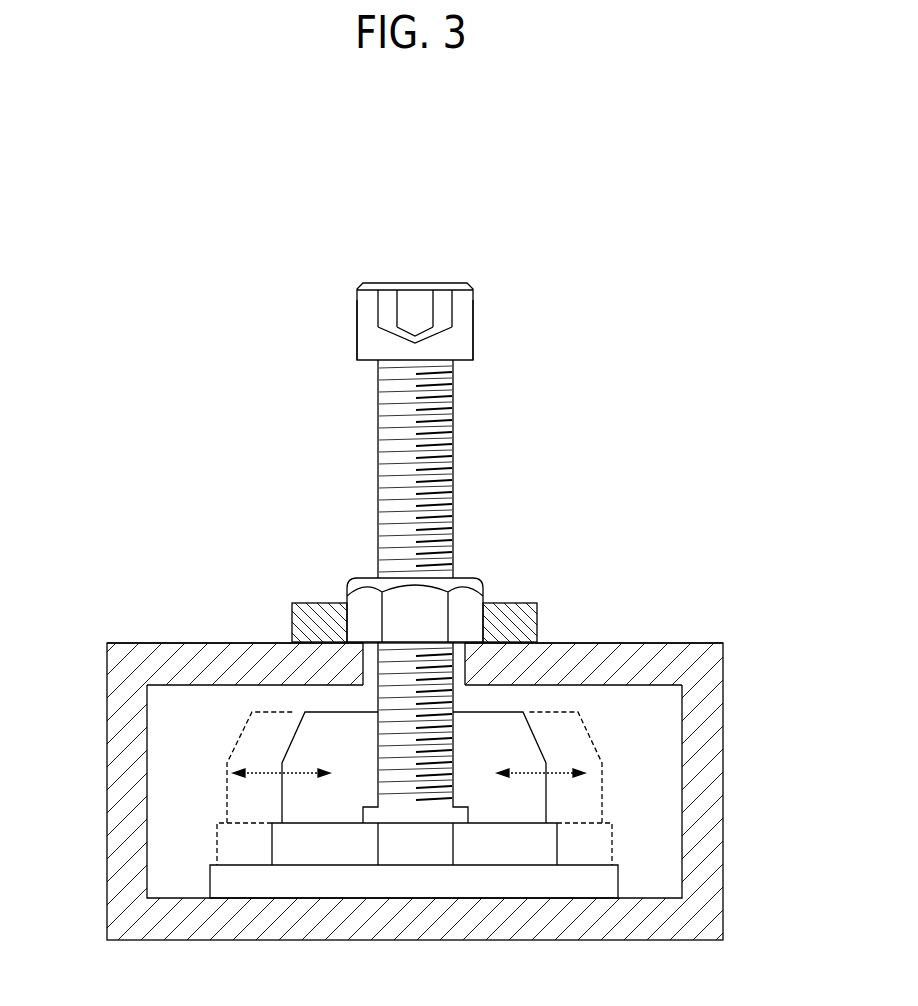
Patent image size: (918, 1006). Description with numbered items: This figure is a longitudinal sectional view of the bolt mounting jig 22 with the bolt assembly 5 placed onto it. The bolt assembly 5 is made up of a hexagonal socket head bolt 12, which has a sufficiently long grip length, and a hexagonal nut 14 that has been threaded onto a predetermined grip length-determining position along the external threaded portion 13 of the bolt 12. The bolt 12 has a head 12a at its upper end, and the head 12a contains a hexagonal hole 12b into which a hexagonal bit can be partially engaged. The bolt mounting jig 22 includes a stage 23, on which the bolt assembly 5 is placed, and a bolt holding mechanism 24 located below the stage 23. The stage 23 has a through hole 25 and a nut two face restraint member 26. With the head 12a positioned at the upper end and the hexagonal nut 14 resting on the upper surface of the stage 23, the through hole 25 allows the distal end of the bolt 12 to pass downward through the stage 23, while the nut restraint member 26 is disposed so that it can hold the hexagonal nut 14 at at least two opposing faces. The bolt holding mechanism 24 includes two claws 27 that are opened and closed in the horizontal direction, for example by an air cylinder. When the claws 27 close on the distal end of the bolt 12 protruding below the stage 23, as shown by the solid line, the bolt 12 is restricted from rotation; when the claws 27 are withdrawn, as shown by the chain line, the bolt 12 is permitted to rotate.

The bolt assembly 5 is at (419, 511).
The hexagonal socket head bolt 12 is at (419, 288).
The head 12a is at (464, 317).
The hexagonal hole 12b is at (392, 287).
The external threaded portion 13 is at (453, 450).
The hexagonal nut 14 is at (475, 583).
The bolt mounting jig 22 is at (424, 729).
The stage 23 is at (192, 643).
The bolt holding mechanism 24 is at (648, 772).
The through hole 25 is at (390, 655).
The nut two face restraint member 26 is at (306, 603).
The claws 27 is at (287, 735).